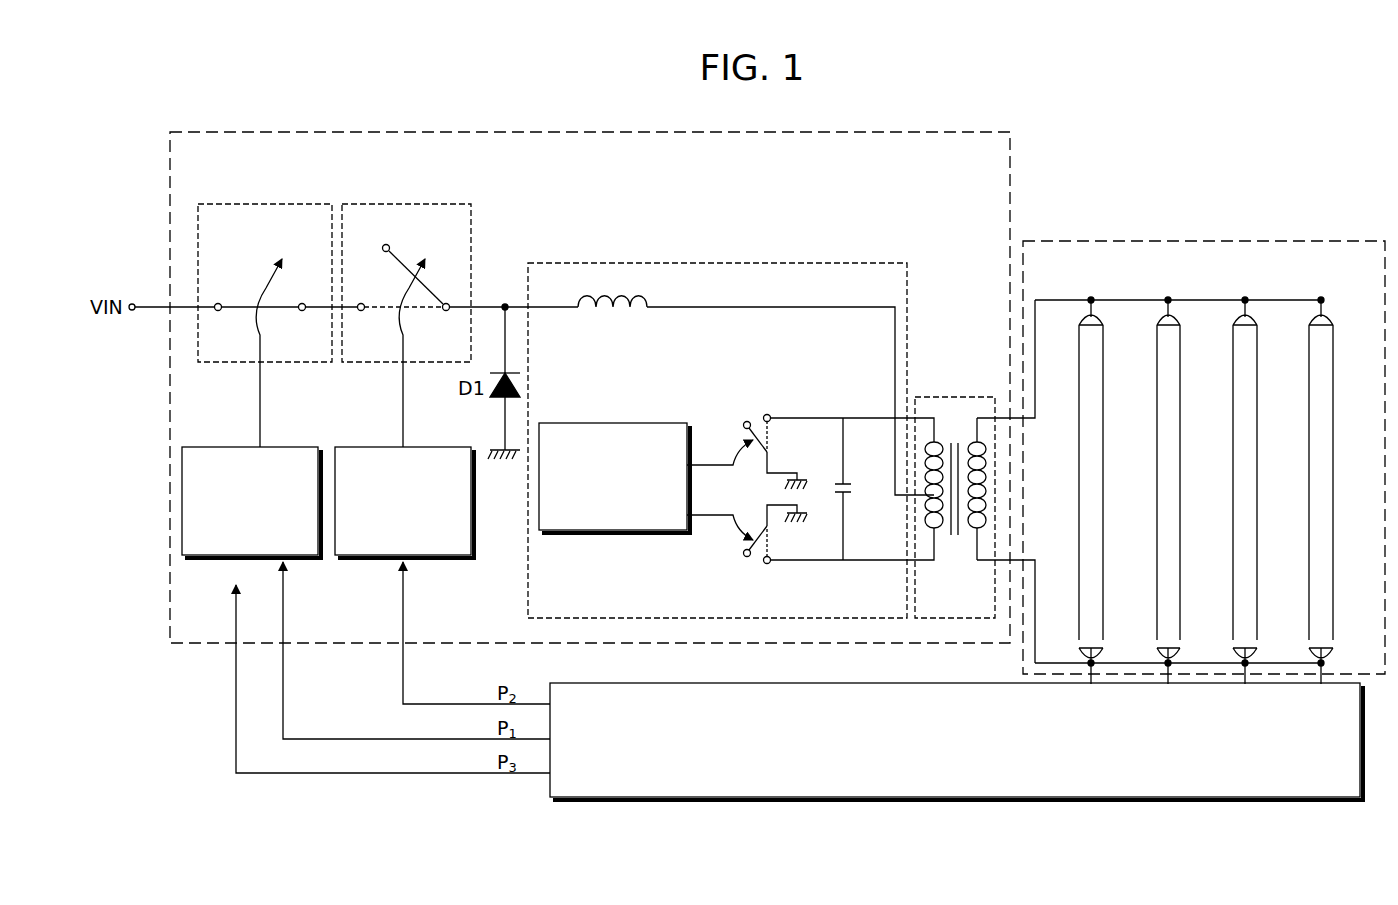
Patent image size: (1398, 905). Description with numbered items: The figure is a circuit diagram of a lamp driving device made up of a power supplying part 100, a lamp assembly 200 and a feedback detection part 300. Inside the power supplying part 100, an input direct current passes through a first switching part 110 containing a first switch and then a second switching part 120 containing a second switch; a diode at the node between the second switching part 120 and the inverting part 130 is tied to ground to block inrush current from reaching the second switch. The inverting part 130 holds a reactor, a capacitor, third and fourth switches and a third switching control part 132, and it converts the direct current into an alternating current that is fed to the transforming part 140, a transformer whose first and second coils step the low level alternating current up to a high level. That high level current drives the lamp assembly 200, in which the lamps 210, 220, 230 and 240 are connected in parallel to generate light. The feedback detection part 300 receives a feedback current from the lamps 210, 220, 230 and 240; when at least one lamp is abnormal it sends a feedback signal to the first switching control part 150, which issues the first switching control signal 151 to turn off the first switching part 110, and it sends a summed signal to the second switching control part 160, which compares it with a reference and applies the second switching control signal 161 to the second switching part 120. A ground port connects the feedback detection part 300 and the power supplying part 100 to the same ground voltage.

The power supplying part 100 is at (595, 132).
The first switching part 110 is at (258, 204).
The second switching part 120 is at (405, 204).
The inverting part 130 is at (716, 263).
The third switching control part 132 is at (625, 398).
The transforming part 140 is at (955, 397).
The first switching control part 150 is at (182, 487).
The first switching control signal 151 is at (260, 403).
The second switching control part 160 is at (476, 543).
The second switching control signal 161 is at (403, 403).
The lamp assembly 200 is at (1195, 241).
The lamp 210 is at (1098, 437).
The lamp 220 is at (1175, 437).
The lamp 230 is at (1252, 437).
The lamp 240 is at (1328, 437).
The feedback detection part 300 is at (960, 800).